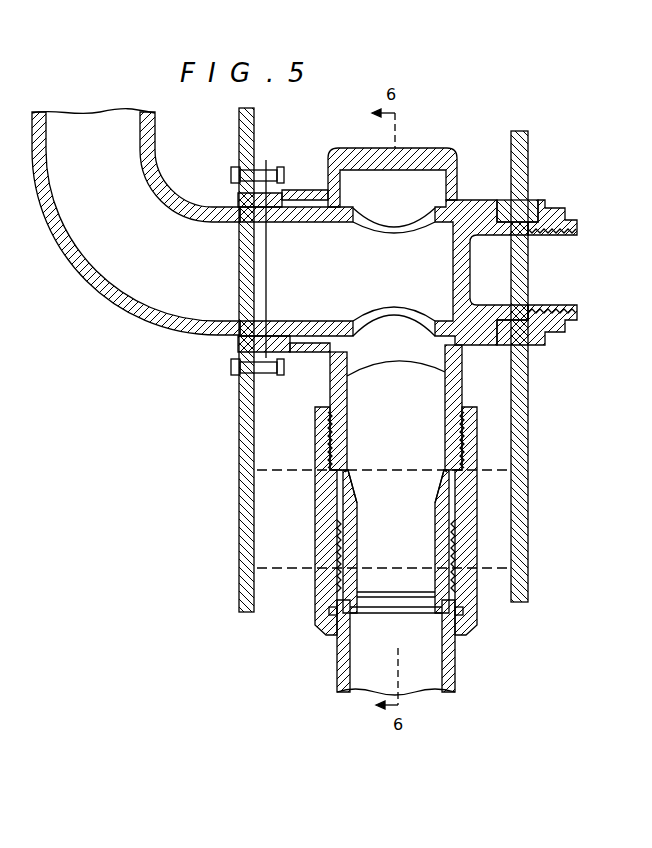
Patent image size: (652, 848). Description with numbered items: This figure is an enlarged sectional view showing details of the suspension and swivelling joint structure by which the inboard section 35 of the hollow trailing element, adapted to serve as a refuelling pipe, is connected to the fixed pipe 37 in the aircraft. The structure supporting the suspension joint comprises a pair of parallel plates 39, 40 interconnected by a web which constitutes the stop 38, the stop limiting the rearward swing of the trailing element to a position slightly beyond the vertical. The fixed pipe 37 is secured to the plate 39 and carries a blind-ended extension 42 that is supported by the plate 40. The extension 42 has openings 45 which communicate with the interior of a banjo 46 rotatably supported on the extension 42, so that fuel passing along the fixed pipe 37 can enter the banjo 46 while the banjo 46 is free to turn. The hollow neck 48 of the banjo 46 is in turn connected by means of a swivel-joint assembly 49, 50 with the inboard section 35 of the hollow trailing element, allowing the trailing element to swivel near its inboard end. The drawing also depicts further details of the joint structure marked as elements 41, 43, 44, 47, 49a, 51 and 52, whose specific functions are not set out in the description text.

The inboard section 35 is at (458, 683).
The fixed pipe 37 is at (75, 272).
The stop 38 is at (300, 570).
The plate 39 is at (239, 462).
The plate 40 is at (528, 447).
The bolt 41 is at (234, 170).
The blind-ended extension 42 is at (495, 221).
The lower gland nut 43 is at (518, 350).
The upper gland nut 44 is at (552, 210).
The openings 45 is at (398, 313).
The banjo 46 is at (436, 150).
The valve body flange 47 is at (318, 206).
The hollow neck 48 is at (462, 386).
The swivel-joint assembly 49 is at (478, 540).
The coupling sleeve taper 49a is at (449, 498).
The swivel-joint assembly 50 is at (345, 494).
The threads 51 is at (318, 420).
The inner tube 52 is at (478, 602).